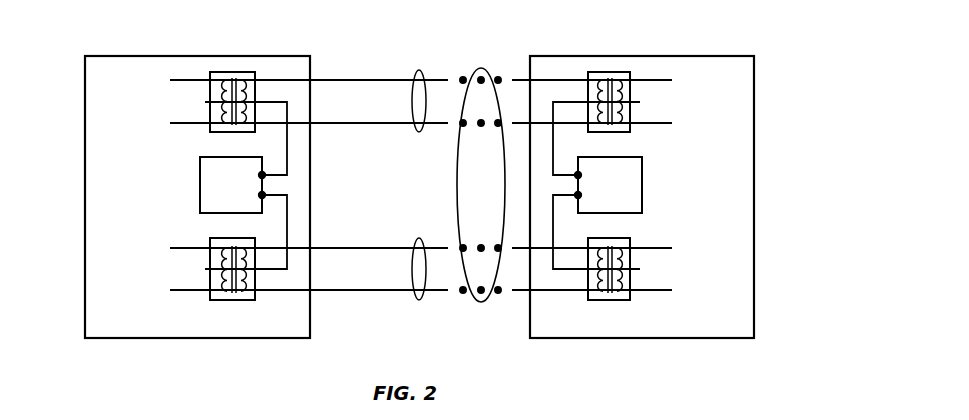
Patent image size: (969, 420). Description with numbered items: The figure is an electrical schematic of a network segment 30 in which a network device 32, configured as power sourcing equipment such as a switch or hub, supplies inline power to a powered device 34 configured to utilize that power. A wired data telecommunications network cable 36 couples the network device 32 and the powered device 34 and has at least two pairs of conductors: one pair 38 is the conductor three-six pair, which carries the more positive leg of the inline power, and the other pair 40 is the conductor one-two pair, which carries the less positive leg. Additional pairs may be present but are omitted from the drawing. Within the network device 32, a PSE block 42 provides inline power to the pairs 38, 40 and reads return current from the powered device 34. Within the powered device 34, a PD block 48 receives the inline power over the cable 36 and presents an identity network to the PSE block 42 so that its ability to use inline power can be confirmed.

The network segment 30 is at (810, 41).
The network device 32 is at (240, 209).
The powered device 34 is at (661, 209).
The wired data telecommunications network cable 36 is at (481, 69).
The pair 38 is at (419, 70).
The pair 40 is at (419, 300).
The PSE block 42 is at (200, 185).
The PD block 48 is at (642, 185).